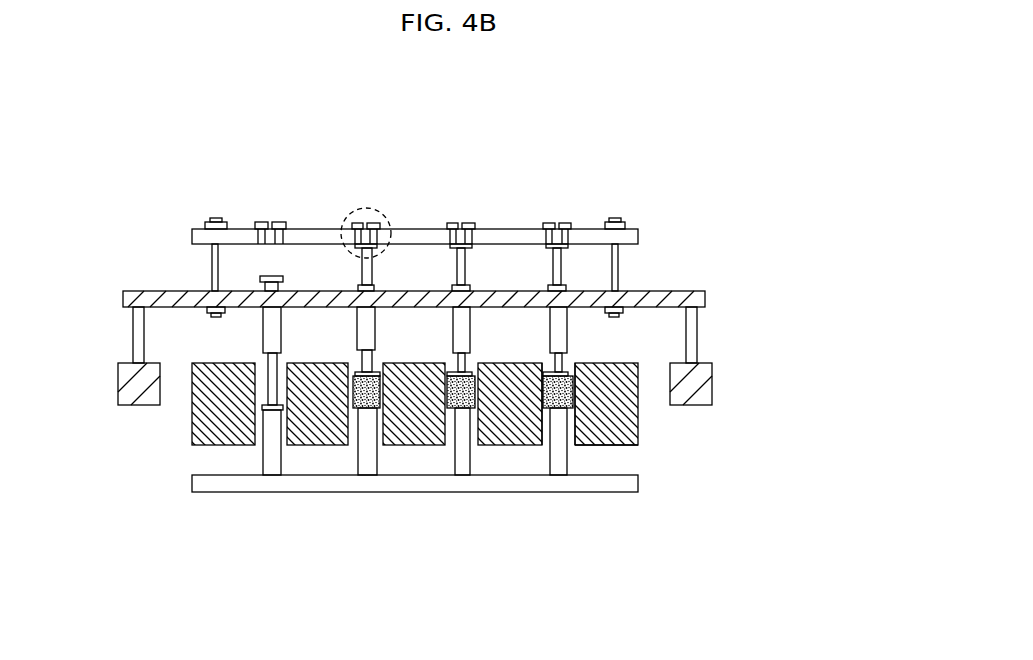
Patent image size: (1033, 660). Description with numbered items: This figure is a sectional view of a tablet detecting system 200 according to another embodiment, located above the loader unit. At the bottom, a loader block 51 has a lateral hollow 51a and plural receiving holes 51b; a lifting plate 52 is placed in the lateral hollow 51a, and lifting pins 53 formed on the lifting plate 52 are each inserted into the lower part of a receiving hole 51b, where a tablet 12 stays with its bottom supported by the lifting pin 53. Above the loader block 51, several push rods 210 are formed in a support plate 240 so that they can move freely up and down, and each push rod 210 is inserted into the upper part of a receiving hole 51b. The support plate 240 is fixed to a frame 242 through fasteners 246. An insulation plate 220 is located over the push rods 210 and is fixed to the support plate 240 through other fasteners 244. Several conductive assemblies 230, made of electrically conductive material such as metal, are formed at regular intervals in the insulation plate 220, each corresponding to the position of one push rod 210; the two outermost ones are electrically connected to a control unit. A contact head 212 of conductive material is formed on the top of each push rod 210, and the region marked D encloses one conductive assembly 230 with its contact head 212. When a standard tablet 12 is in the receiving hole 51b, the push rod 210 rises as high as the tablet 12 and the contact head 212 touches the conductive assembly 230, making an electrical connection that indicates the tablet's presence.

The tablet detecting system 200 is at (722, 166).
The insulation plate 220 is at (498, 235).
The conductive assembly 230 is at (266, 208).
The detail region D is at (383, 212).
The push rod 210 is at (465, 372).
The contact head 212 is at (273, 276).
The support plate 240 is at (658, 291).
The fasteners 244 is at (212, 281).
The fasteners 246 is at (137, 340).
The frame 242 is at (135, 405).
The loader block 51 is at (415, 433).
The lateral hollow 51a is at (613, 457).
The receiving hole 51b is at (568, 363).
The tablet 12 is at (575, 385).
The lifting pin 53 is at (557, 457).
The lifting plate 52 is at (597, 482).